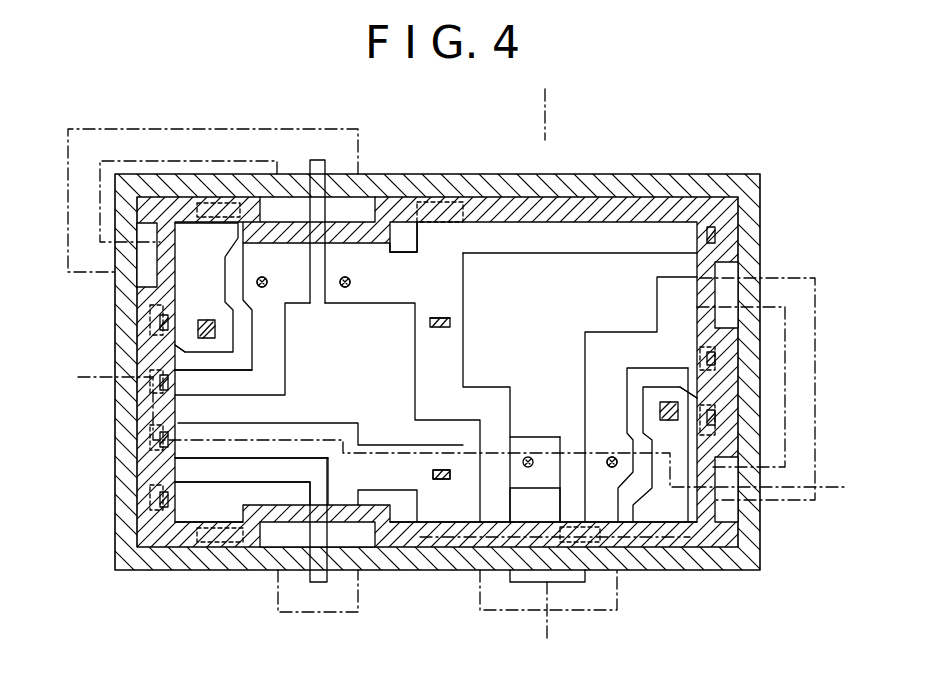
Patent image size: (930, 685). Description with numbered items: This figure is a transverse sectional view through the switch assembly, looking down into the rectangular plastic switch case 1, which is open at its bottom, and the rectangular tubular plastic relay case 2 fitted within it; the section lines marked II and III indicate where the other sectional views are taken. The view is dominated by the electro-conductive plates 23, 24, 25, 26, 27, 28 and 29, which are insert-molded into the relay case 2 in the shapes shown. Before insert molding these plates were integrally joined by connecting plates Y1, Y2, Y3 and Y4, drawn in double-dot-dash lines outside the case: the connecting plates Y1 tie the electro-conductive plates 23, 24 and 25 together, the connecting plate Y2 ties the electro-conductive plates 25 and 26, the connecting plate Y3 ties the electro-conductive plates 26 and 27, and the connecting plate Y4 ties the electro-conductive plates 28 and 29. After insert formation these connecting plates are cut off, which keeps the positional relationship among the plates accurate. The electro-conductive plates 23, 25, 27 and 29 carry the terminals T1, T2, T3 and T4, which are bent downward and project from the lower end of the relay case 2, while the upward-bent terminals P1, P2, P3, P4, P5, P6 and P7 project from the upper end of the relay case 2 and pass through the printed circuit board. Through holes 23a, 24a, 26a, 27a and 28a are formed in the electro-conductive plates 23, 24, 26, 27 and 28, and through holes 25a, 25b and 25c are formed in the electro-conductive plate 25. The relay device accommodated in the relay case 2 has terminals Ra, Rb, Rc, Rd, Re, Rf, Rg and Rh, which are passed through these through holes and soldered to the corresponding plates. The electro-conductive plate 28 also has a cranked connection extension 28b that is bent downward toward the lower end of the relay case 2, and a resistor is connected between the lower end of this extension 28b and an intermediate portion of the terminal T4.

The switch case 1 is at (685, 174).
The relay case 2 is at (603, 197).
The electro-conductive plate 23 is at (177, 343).
The through hole 23a is at (198, 333).
The electro-conductive plate 24 is at (285, 368).
The through hole 24a is at (279, 276).
The electro-conductive plate 25 is at (393, 305).
The through hole 25a is at (351, 283).
The through hole 25b is at (523, 466).
The through hole 25c is at (440, 328).
The electro-conductive plate 26 is at (618, 332).
The through hole 26a is at (612, 467).
The electro-conductive plate 27 is at (625, 522).
The through hole 27a is at (678, 408).
The electro-conductive plate 28 is at (350, 423).
The through hole 28a is at (433, 472).
The connection extension 28b is at (535, 505).
The electro-conductive plate 29 is at (190, 478).
The terminal P1 is at (203, 320).
The terminal P2 is at (160, 383).
The terminal P3 is at (715, 235).
The terminal P4 is at (715, 358).
The terminal P5 is at (715, 416).
The terminal P6 is at (160, 440).
The terminal P7 is at (160, 500).
The relay device terminal Ra is at (210, 338).
The relay device terminal Rb is at (265, 289).
The relay device terminal Rc is at (345, 289).
The relay device terminal Rd is at (531, 457).
The relay device terminal Re is at (438, 318).
The relay device terminal Rf is at (609, 457).
The relay device terminal Rg is at (662, 402).
The relay device terminal Rh is at (438, 480).
The terminal T1 is at (206, 287).
The terminal T2 is at (419, 239).
The terminal T3 is at (671, 445).
The terminal T4 is at (242, 500).
The connecting plate Y1 is at (220, 129).
The connecting plate Y2 is at (568, 612).
The connecting plate Y3 is at (818, 310).
The connecting plate Y4 is at (347, 612).
The section line II- II is at (509, 81).
The section line III- III is at (74, 322).